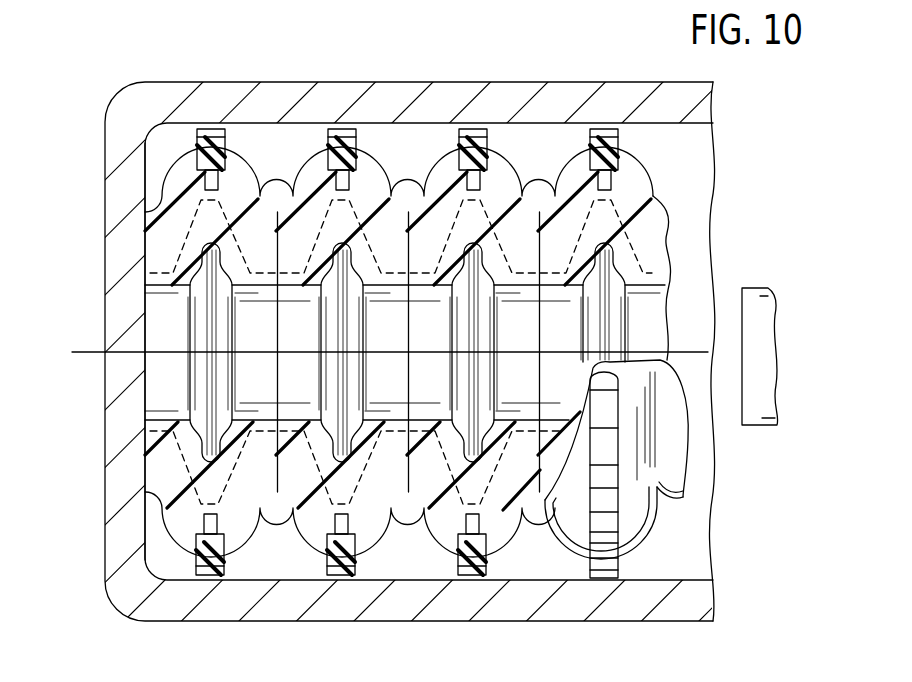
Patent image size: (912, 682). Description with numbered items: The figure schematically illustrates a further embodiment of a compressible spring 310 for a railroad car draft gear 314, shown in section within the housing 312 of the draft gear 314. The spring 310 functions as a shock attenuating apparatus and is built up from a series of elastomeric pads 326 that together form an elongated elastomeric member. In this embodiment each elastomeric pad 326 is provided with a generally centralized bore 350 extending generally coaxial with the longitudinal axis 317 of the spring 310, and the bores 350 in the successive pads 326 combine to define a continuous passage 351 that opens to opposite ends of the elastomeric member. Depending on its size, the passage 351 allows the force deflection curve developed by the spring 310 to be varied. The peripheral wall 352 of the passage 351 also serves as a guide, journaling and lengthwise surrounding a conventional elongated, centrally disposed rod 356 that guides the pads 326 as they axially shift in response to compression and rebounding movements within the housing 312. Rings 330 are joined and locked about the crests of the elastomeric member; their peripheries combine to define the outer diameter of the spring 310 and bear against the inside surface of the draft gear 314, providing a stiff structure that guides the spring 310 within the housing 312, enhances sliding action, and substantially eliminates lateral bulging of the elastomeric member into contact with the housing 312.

The compressible spring 310 is at (158, 149).
The housing 312 is at (116, 193).
The draft gear 314 is at (84, 500).
The longitudinal axis 317 is at (86, 352).
The elastomeric pad 326 is at (576, 565).
The ring 330 is at (631, 140).
The bore 350 is at (165, 288).
The continuous passage 351 is at (657, 315).
The peripheral wall 352 is at (165, 418).
The rod 356 is at (764, 427).